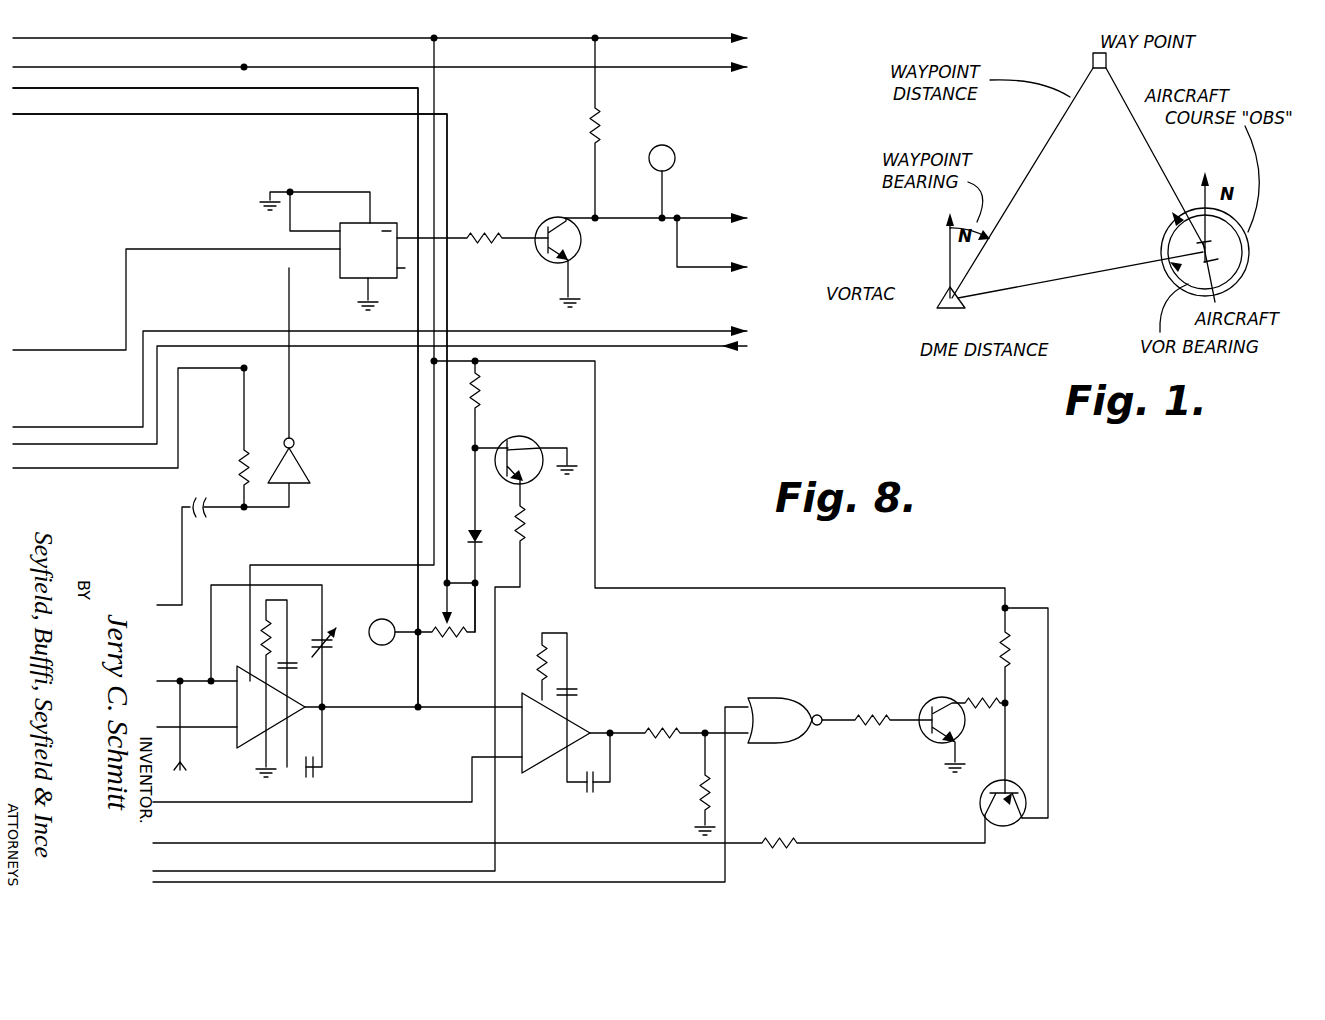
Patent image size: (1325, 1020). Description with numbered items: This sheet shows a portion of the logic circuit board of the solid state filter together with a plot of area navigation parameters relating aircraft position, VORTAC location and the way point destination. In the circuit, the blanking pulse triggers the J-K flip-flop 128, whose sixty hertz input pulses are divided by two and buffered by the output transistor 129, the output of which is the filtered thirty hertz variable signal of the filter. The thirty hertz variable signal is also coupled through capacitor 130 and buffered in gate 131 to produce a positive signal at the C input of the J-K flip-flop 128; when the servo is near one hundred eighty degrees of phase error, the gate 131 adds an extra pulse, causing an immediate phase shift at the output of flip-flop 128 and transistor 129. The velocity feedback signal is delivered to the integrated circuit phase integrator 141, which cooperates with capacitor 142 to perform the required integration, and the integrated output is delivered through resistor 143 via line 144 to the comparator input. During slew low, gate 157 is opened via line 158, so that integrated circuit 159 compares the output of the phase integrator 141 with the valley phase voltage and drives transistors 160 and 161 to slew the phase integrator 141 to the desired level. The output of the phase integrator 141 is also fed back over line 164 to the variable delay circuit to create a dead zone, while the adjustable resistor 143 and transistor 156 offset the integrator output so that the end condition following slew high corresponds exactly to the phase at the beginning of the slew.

The J-K flip-flop 128 is at (378, 223).
The output transistor 129 is at (578, 250).
The capacitor 130 is at (194, 504).
The gate 131 is at (297, 442).
The phase integrator 141 is at (252, 731).
The capacitor 142 is at (326, 640).
The resistor 143 is at (442, 640).
The line 144 is at (195, 114).
The transistor 156 is at (540, 478).
The gate 157 is at (770, 704).
The line 158 is at (522, 884).
The integrated circuit 159 is at (548, 757).
The transistor 160 is at (947, 677).
The transistor 161 is at (982, 809).
The line 164 is at (93, 88).